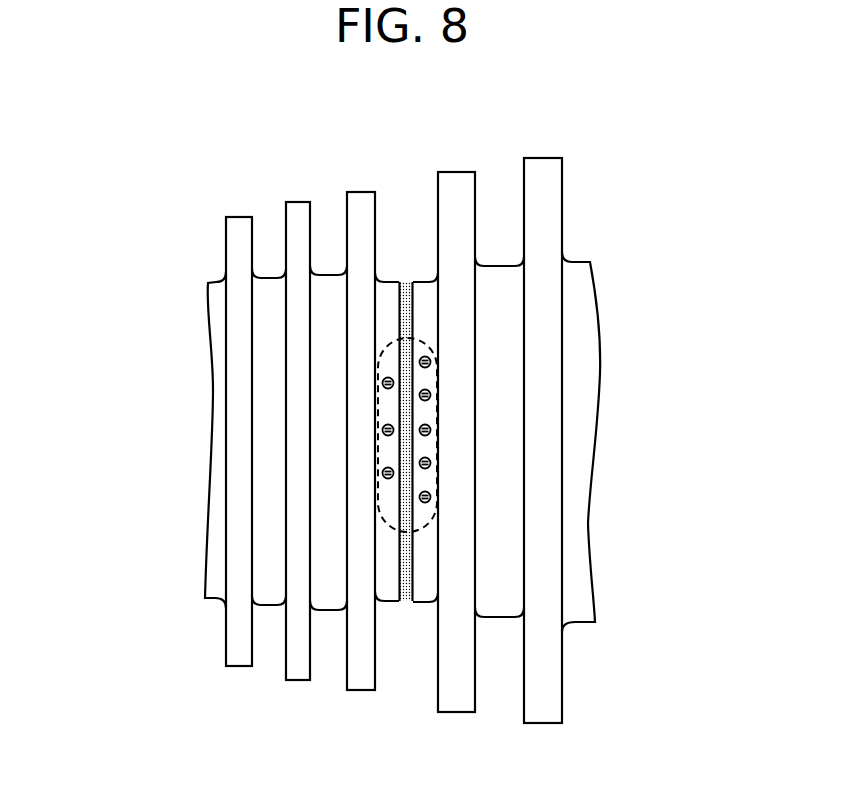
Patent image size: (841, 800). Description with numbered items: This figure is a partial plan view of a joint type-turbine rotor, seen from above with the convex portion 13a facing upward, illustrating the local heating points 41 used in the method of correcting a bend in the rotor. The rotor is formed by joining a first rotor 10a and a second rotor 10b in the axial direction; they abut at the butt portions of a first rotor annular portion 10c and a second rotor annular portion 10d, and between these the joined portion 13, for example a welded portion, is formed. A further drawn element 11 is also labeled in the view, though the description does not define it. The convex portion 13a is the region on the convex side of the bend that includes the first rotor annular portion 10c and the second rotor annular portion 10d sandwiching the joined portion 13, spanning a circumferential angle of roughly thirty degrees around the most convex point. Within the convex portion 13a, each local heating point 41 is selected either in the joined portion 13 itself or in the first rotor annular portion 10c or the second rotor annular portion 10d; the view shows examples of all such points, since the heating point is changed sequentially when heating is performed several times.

The first rotor 10a is at (208, 418).
The second rotor 10b is at (602, 405).
The first rotor annular portion 10c is at (397, 282).
The second rotor annular portion 10d is at (425, 282).
The fin 11 is at (455, 327).
The joined portion 13 is at (407, 282).
The convex portion 13a is at (392, 340).
The local heating point 41 is at (388, 478).